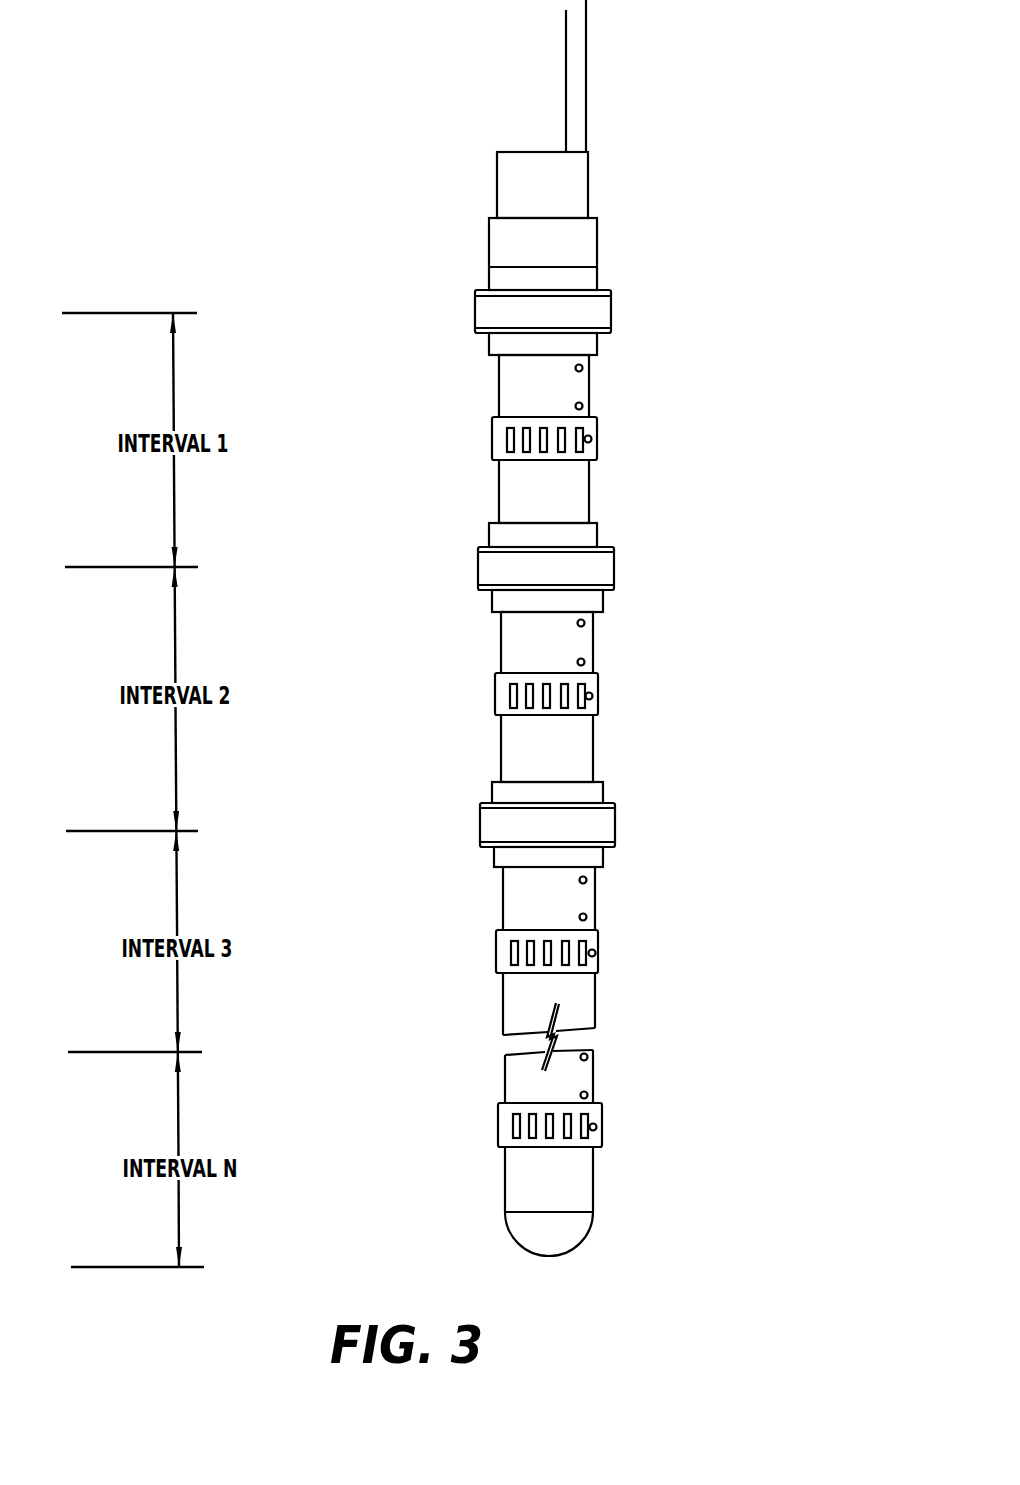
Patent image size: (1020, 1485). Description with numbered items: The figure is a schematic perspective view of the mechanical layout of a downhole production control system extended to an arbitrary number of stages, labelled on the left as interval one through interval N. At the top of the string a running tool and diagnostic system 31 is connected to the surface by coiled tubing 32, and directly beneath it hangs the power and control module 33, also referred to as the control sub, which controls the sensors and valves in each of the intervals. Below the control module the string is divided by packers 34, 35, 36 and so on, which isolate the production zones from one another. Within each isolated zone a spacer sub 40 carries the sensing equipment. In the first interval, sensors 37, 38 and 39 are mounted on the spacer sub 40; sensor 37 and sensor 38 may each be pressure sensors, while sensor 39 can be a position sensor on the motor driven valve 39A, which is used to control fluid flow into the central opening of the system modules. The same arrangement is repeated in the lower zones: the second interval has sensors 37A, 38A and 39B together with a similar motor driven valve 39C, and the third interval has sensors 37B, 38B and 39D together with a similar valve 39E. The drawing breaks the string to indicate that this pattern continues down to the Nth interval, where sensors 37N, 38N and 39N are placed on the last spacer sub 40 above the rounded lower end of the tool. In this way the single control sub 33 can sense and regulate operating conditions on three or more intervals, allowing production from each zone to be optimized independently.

The running tool and diagnostic system 31 is at (553, 188).
The coiled tubing 32 is at (589, 50).
The power and control module 33 is at (573, 243).
The packer 34 is at (613, 305).
The packer 35 is at (616, 561).
The packer 36 is at (617, 819).
The sensor 37 is at (589, 366).
The sensor 38 is at (590, 407).
The sensor 39 is at (598, 440).
The sensor 37A is at (591, 622).
The sensor 38A is at (592, 663).
The sensor 39B is at (600, 697).
The sensor 37B is at (594, 879).
The sensor 38B is at (595, 918).
The sensor 39D is at (603, 954).
The sensor 37N is at (595, 1053).
The sensor 38N is at (598, 1095).
The motor driven valve 39A is at (490, 437).
The motor driven valve 39C is at (493, 693).
The motor driven valve 39E is at (494, 949).
The sensor 39N is at (496, 1122).
The spacer sub 40 is at (497, 383).